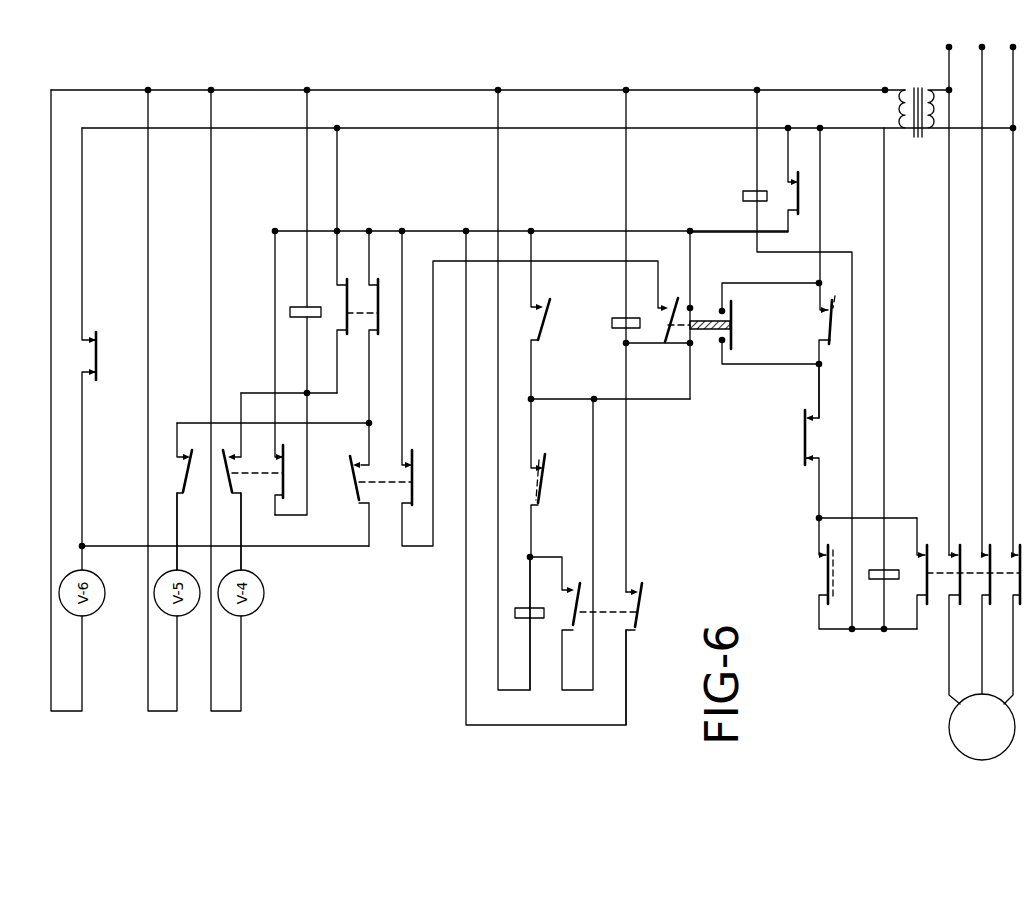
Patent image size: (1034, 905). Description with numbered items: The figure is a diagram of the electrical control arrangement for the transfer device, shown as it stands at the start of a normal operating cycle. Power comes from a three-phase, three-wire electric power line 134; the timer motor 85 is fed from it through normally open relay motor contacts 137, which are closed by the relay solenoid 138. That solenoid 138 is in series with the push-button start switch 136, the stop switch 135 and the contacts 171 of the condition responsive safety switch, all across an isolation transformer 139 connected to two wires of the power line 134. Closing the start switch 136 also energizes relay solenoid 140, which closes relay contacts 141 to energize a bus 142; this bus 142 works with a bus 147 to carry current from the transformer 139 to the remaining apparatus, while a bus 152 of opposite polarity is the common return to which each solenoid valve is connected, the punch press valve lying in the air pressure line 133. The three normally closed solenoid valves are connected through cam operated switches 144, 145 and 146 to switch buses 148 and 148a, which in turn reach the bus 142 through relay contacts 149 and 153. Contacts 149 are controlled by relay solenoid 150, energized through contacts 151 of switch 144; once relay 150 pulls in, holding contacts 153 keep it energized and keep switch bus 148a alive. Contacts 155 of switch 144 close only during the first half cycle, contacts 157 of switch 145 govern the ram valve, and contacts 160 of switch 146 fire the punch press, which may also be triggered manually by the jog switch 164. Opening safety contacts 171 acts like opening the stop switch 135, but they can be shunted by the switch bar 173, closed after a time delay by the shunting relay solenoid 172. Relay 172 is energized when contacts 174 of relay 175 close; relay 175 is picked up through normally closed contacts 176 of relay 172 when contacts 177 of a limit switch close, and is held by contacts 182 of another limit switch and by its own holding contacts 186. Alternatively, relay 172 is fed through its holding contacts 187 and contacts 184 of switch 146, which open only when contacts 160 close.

The bus 152 is at (402, 90).
The bus 147 is at (442, 128).
The bus 142 is at (590, 231).
The jog switch 164 is at (98, 362).
The relay solenoid 150 is at (305, 318).
The holding contacts 153 is at (348, 336).
The relay contacts 149 is at (379, 336).
The switch bus 148a is at (262, 393).
The switch bus 148 is at (258, 424).
The contacts 151 is at (285, 470).
The cam operated switch 144 is at (255, 482).
The contacts 155 is at (227, 478).
The contacts 157 is at (192, 482).
The cam operated switch 145 is at (178, 482).
The contacts 160 is at (352, 475).
The contacts 184 is at (412, 452).
The cam operated switch 146 is at (385, 490).
The contacts 182 is at (548, 318).
The shunting relay solenoid 172 is at (612, 321).
The holding contacts 187 is at (674, 300).
The normally closed contacts 176 is at (686, 343).
The switch bar 173 is at (733, 330).
The contacts 171 is at (831, 322).
The normally open contacts 177 is at (546, 462).
The relay 175 is at (522, 608).
The relay holding contacts 186 is at (575, 622).
The contacts 174 is at (640, 618).
The relay solenoid 140 is at (743, 196).
The relay contacts 141 is at (800, 200).
The isolation transformer 139 is at (918, 137).
The electric power line 134 is at (1013, 210).
The stop switch 135 is at (803, 440).
The start switch 136 is at (826, 570).
The relay solenoid 138 is at (890, 579).
The air pressure line 133 is at (927, 560).
The relay motor contacts 137 is at (1020, 598).
The timer motor 85 is at (968, 733).